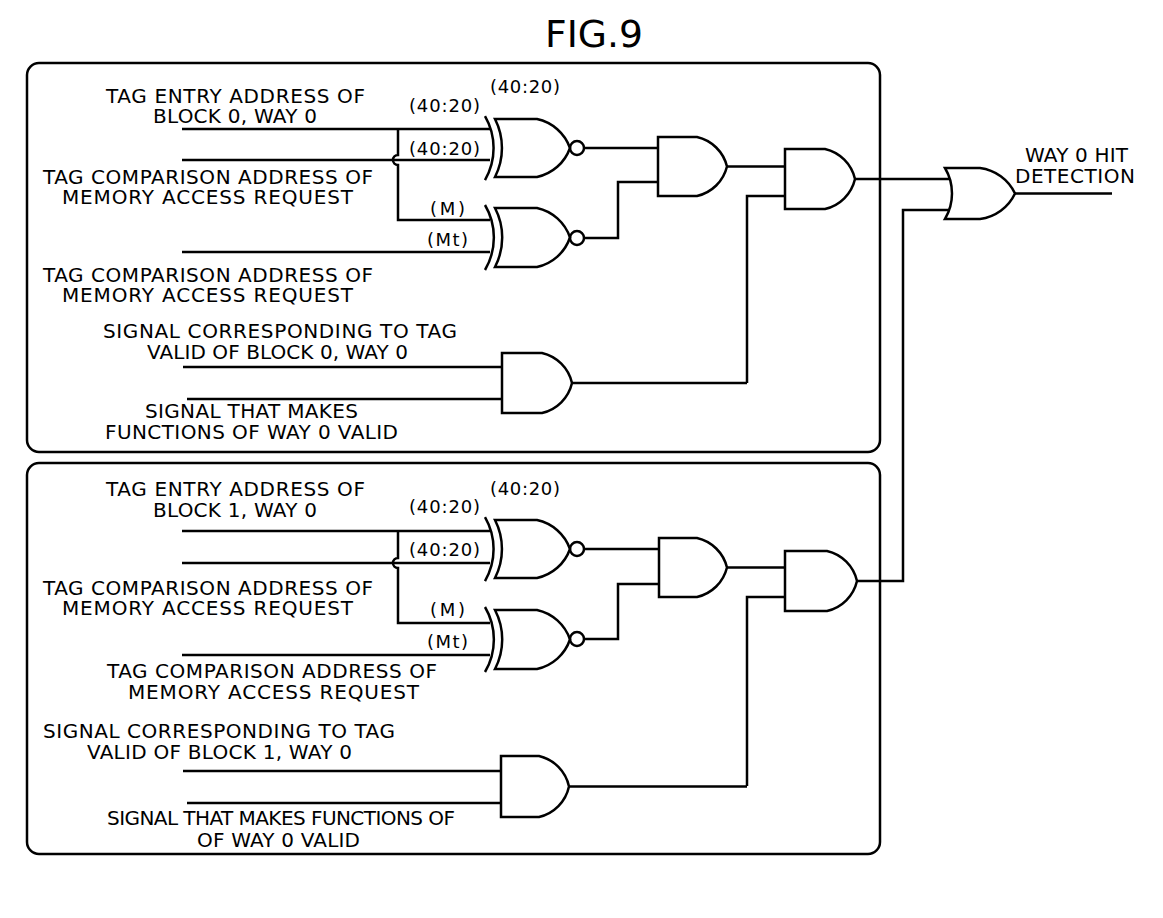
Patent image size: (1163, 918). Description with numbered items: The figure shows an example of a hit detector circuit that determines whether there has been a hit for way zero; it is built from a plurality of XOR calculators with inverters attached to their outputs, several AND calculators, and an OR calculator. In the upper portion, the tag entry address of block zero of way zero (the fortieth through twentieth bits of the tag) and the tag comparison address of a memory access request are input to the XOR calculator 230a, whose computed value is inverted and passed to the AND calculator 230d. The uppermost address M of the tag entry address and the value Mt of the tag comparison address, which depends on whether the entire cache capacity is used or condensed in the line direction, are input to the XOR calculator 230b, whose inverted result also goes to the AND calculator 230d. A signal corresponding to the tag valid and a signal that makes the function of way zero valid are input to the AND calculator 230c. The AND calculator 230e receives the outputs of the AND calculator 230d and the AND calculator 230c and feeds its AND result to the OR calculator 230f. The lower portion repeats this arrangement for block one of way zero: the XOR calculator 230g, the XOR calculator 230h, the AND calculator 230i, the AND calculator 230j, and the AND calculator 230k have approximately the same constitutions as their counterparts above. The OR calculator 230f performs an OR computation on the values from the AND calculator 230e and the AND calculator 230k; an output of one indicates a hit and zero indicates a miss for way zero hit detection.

The XOR calculator 230a is at (569, 141).
The XOR calculator 230b is at (553, 207).
The AND calculator 230c is at (540, 353).
The AND calculator 230d is at (707, 138).
The AND calculator 230e is at (817, 150).
The OR calculator 230f is at (985, 168).
The XOR calculator 230g is at (569, 543).
The XOR calculator 230h is at (553, 609).
The AND calculator 230i is at (540, 756).
The AND calculator 230j is at (707, 539).
The AND calculator 230k is at (817, 552).